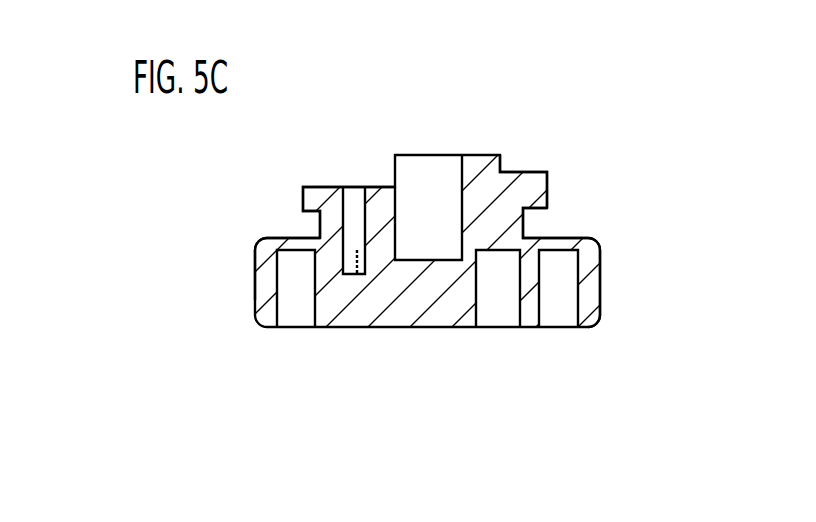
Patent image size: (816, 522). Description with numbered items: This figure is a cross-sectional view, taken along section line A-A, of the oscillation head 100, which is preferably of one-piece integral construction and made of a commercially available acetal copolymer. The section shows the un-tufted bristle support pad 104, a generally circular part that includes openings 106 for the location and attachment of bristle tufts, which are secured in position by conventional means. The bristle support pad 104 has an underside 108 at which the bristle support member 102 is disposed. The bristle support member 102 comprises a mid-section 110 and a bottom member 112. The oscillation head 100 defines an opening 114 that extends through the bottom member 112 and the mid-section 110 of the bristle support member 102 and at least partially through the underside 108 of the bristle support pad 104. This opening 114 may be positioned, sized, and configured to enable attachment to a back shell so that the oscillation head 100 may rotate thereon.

The oscillation head 100 is at (590, 157).
The bristle support member 102 is at (276, 195).
The un-tufted bristle support pad 104 is at (600, 267).
The openings 106 is at (300, 305).
The underside 108 is at (267, 235).
The mid-section 110 is at (498, 241).
The bottom member 112 is at (514, 186).
The opening 114 is at (421, 186).